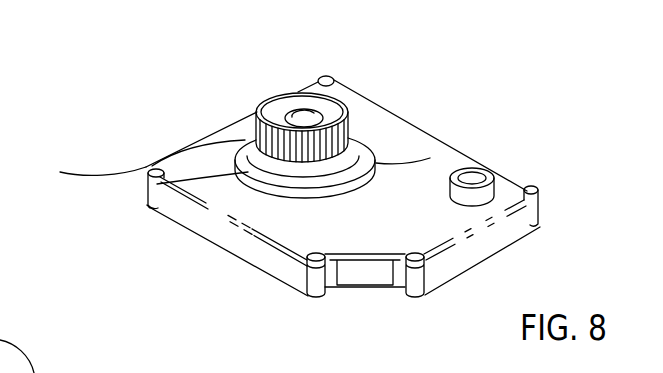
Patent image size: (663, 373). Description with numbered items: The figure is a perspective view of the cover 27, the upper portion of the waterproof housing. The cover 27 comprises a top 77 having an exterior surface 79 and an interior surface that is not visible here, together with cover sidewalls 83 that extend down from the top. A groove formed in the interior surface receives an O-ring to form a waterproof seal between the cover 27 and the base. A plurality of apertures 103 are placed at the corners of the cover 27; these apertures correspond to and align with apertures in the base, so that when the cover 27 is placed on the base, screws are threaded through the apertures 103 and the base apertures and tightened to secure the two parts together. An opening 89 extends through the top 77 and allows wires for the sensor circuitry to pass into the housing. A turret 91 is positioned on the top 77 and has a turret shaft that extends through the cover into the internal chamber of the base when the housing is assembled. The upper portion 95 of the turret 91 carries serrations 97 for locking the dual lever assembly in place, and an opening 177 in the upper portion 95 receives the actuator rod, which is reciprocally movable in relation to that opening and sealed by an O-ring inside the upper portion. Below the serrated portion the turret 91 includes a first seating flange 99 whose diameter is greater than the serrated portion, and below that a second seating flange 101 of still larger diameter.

The cover 27 is at (193, 281).
The top 77 is at (233, 205).
The exterior surface 79 is at (438, 148).
The cover sidewalls 83 is at (490, 250).
The opening 89 is at (481, 170).
The turret 91 is at (267, 83).
The upper portion of the turret 95 is at (372, 123).
The serrations 97 is at (374, 167).
The first seating flange 99 is at (86, 167).
The second seating flange 101 is at (147, 207).
The apertures 103 is at (331, 76).
The opening 177 is at (348, 113).